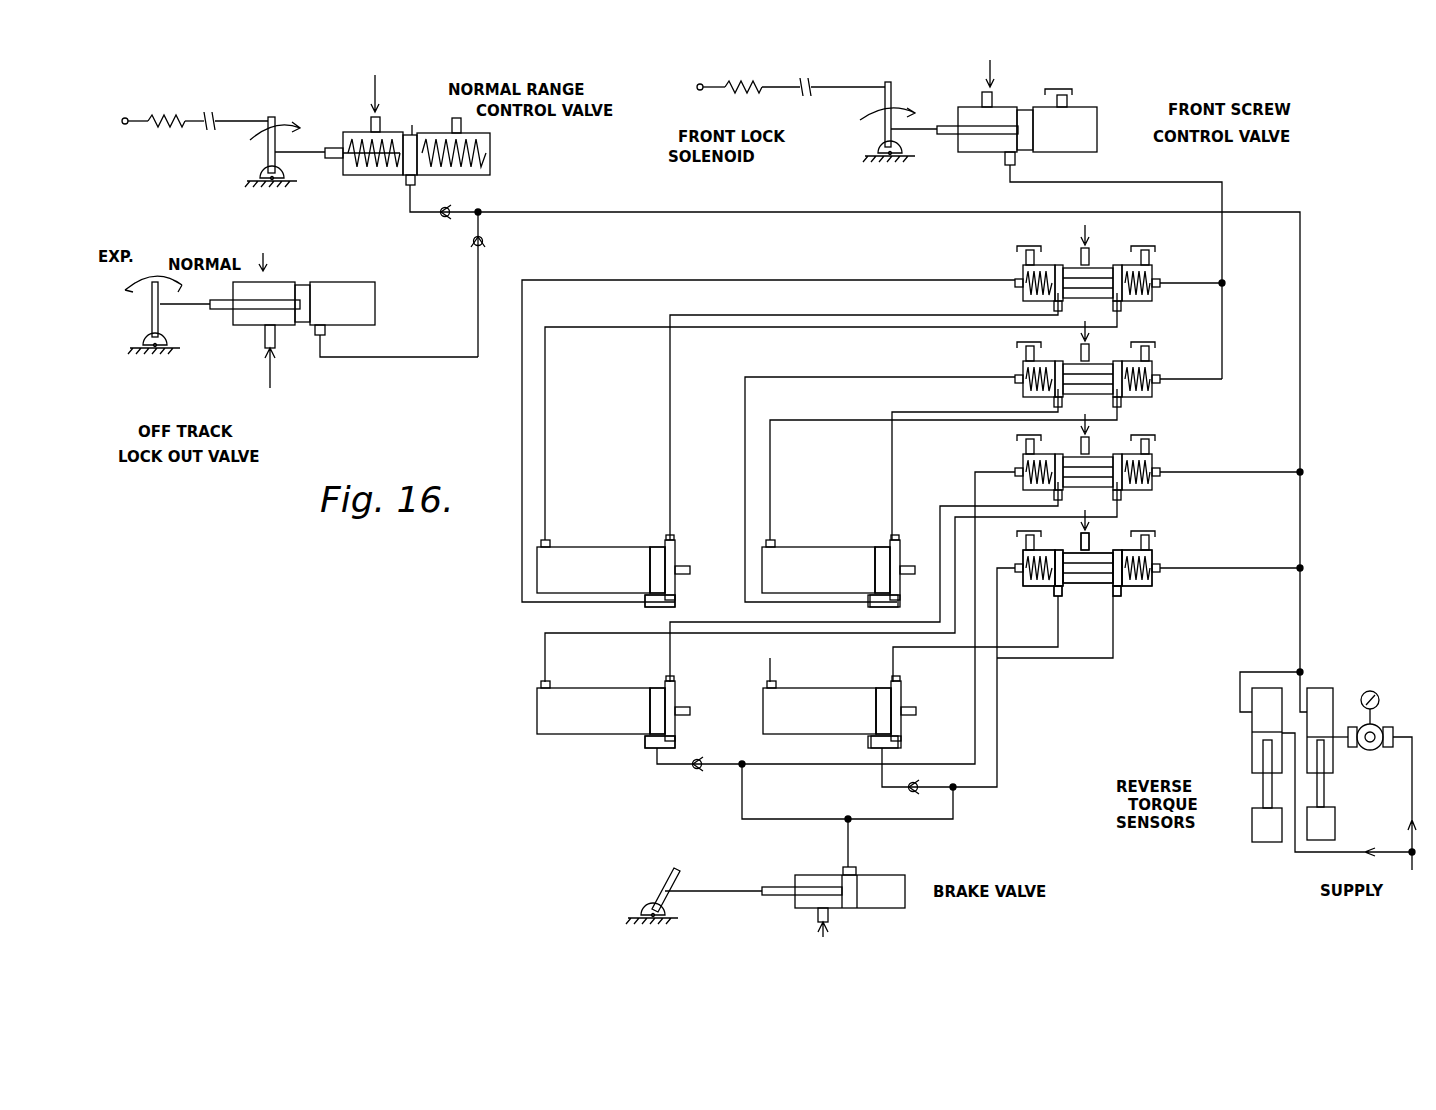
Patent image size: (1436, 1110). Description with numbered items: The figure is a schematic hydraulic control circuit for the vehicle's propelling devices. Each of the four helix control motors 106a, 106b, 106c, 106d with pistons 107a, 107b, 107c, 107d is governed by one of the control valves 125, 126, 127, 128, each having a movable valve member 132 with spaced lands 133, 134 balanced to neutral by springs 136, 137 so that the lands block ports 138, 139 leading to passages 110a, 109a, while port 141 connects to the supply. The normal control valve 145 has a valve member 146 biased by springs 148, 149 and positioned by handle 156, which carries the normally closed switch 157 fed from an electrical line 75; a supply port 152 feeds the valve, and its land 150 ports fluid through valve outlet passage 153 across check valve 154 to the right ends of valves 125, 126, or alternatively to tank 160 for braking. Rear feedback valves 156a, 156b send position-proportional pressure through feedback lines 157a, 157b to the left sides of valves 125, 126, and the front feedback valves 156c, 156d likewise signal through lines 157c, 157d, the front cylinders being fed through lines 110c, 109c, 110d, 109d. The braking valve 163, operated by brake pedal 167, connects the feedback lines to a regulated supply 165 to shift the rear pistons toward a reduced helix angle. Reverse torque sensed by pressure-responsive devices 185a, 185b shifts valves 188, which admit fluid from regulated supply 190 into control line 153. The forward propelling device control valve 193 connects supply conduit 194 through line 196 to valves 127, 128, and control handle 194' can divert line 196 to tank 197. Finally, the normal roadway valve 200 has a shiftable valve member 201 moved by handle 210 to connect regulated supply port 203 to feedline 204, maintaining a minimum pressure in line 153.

The electrical input line 75 is at (158, 118).
The normally closed switch 157 is at (274, 115).
The manually operable handle 156 is at (265, 145).
The spring 148 is at (355, 132).
The movable valve member 146 is at (390, 170).
The port 152 is at (382, 117).
The land 150 is at (412, 136).
The normal control valve 145 is at (506, 159).
The spring 149 is at (470, 160).
The tank 160 is at (462, 128).
The valve outlet passage 153 is at (408, 205).
The check valve 154 is at (445, 220).
The normal roadway valve 200 is at (267, 274).
The shiftable valve member 201 is at (310, 282).
The handle 210 is at (150, 318).
The supply port 203 is at (265, 372).
The feedline 204 is at (430, 360).
The control handle 194' is at (806, 122).
The forward propelling device control valve 193 is at (1112, 109).
The supply conduit 194 is at (951, 83).
The tank 197 is at (1050, 100).
The line 196 is at (1097, 182).
The control valve 128 is at (1176, 271).
The control valve 127 is at (1176, 364).
The control valve 126 is at (1178, 462).
The control valve 125 is at (1173, 550).
The spring 136 is at (1032, 560).
The land 133 is at (1058, 584).
The movable valve member 132 is at (1083, 582).
The port 141 is at (1100, 540).
The spring 137 is at (1150, 575).
The land 134 is at (1125, 585).
The port 139 is at (1120, 598).
The port 138 is at (1062, 602).
The feedback line 157c is at (522, 440).
The line 110c is at (672, 356).
The line 109c is at (602, 327).
The feedback line 157d is at (745, 440).
The line 110d is at (893, 445).
The line 109d is at (810, 420).
The helix control motor 106c is at (580, 555).
The piston 107c is at (655, 550).
The fluid feedback valve 156c is at (655, 607).
The helix control motor 106d is at (800, 555).
The piston 107d is at (880, 550).
The fluid feedback valve 156d is at (872, 597).
The line 110a is at (755, 622).
The line 109a is at (545, 640).
The feedback line 157b is at (1000, 745).
The feedback line 157a is at (720, 770).
The helix control motor 106a is at (565, 720).
The piston 107a is at (658, 690).
The fluid feedback valve 156a is at (650, 750).
The helix control motor 106b is at (780, 725).
The piston 107b is at (880, 690).
The fluid feedback valve 156b is at (898, 742).
The valve 188 is at (1262, 780).
The pressure-responsive device 185a is at (1262, 825).
The pressure-responsive device 185b is at (1325, 825).
The regulated supply 190 is at (1342, 728).
The braking valve 163 is at (927, 870).
The regulated supply 165 is at (815, 913).
The brake pedal 167 is at (668, 880).